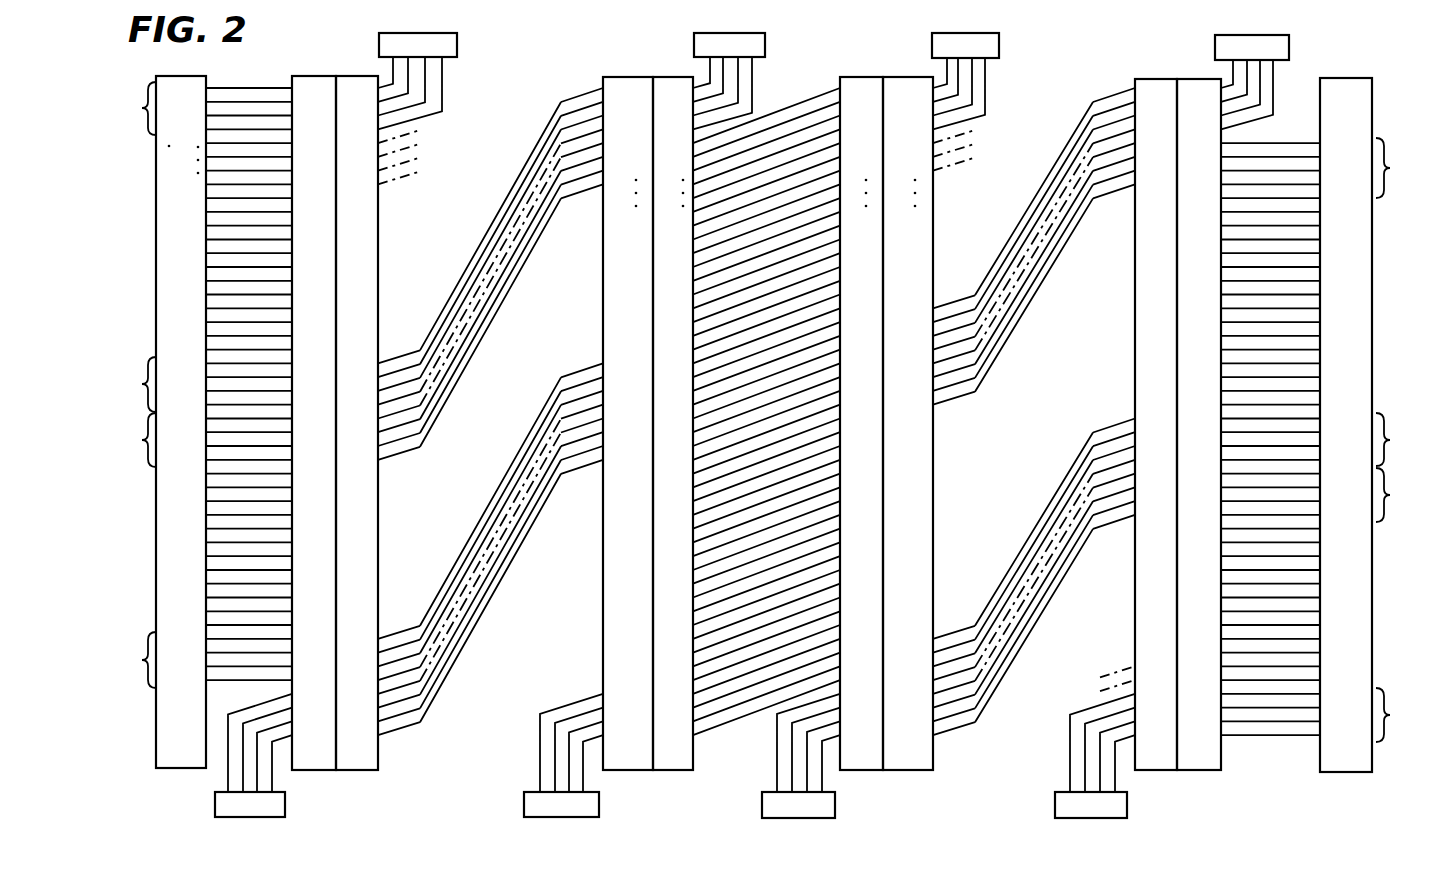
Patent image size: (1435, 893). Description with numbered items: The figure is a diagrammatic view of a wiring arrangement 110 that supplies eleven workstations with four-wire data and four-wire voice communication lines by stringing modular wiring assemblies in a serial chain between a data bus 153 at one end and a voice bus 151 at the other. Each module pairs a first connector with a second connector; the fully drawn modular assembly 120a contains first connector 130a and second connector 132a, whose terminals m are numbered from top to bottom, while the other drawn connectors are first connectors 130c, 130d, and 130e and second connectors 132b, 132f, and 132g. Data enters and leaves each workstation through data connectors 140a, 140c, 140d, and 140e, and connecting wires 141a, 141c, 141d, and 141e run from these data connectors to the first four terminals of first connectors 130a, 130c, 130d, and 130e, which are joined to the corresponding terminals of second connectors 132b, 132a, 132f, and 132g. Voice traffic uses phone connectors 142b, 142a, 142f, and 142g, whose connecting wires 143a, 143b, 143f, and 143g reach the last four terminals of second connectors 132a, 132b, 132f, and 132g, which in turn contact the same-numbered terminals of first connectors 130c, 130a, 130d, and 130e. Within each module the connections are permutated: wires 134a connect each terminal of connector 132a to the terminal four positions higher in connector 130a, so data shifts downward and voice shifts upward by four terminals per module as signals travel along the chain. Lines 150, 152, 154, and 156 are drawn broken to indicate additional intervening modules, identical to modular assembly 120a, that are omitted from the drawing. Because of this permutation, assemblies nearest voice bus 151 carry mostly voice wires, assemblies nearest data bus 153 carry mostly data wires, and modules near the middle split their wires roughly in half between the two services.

The wiring arrangement 110 is at (1342, 52).
The modular assembly 120a is at (758, 420).
The first connector 130a is at (660, 77).
The first connector 130c is at (898, 77).
The first connector 130d is at (355, 76).
The first connector 130e is at (1188, 79).
The second connector 132a is at (853, 77).
The second connector 132b is at (627, 77).
The second connector 132f is at (313, 76).
The second connector 132g is at (1145, 79).
The wires 134a is at (722, 752).
The data connector 140a is at (748, 30).
The data connector 140c is at (994, 32).
The data connector 140d is at (449, 30).
The data connector 140e is at (1279, 33).
The connecting wires 141a is at (765, 78).
The connecting wires 141c is at (994, 100).
The connecting wires 141d is at (452, 95).
The connecting wires 141e is at (1281, 103).
The phone connector 142a is at (758, 812).
The phone connector 142b is at (520, 805).
The phone connector 142f is at (290, 808).
The phone connector 142g is at (1046, 813).
The connecting wires 143a is at (765, 775).
The connecting wires 143b is at (508, 772).
The connecting wires 143f is at (226, 765).
The connecting wires 143g is at (1040, 768).
The lines 150 is at (435, 560).
The voice bus 151 is at (1320, 796).
The lines 152 is at (1025, 342).
The data bus 153 is at (161, 778).
The lines 154 is at (478, 368).
The lines 156 is at (1025, 523).